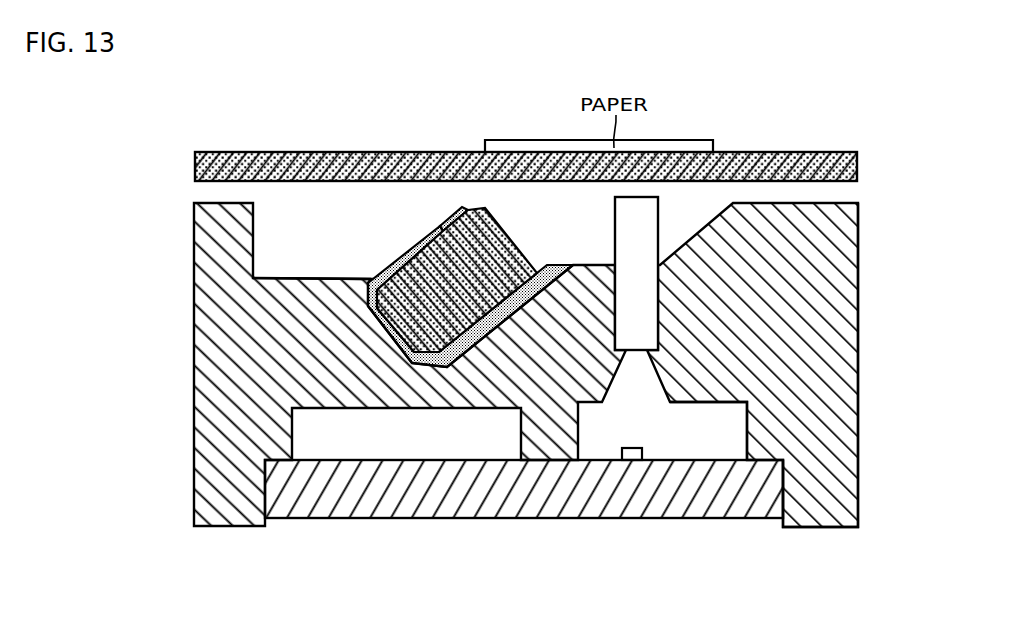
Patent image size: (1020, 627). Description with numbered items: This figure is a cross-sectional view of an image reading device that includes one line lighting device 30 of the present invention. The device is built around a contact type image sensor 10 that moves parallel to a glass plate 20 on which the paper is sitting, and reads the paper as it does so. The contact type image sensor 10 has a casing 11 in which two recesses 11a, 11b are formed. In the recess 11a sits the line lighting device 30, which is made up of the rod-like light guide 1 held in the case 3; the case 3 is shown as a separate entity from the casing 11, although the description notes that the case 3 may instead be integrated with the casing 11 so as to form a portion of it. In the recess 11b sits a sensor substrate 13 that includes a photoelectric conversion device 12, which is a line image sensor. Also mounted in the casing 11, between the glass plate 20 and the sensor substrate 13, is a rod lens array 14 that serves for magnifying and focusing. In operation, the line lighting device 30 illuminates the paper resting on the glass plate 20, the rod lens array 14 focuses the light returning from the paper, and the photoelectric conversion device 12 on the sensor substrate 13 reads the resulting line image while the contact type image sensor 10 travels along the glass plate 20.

The rod-like light guide 1 is at (497, 247).
The case 3 is at (443, 227).
The contact type image sensor 10 is at (868, 267).
The casing 11 is at (821, 514).
The recess 11a is at (308, 277).
The recess 11b is at (743, 432).
The photoelectric conversion device 12 is at (633, 461).
The sensor substrate 13 is at (490, 506).
The rod lens array 14 is at (650, 212).
The glass plate 20 is at (373, 150).
The line lighting device 30 is at (400, 242).